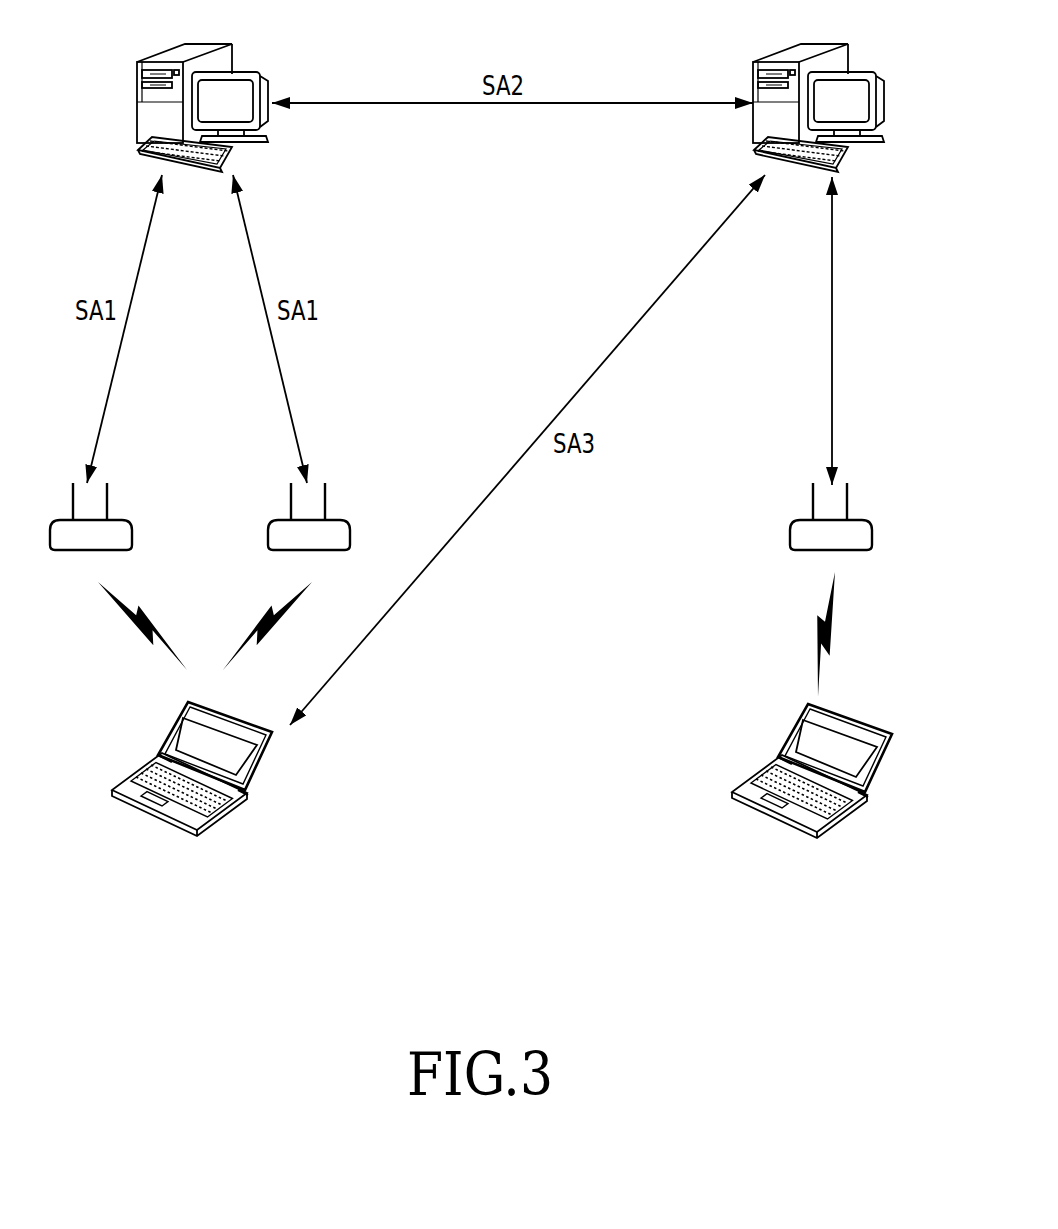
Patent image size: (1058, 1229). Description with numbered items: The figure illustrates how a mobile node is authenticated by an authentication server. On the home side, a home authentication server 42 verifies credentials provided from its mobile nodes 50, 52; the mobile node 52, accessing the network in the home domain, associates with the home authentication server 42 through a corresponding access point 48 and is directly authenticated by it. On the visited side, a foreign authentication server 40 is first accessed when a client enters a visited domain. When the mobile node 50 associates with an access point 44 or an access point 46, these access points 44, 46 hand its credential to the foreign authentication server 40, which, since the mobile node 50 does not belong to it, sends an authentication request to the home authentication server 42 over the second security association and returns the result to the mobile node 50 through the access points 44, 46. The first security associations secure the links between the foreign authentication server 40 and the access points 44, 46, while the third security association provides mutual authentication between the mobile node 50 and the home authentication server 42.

The foreign authentication server 40 is at (137, 97).
The home authentication server 42 is at (885, 104).
The access point 44 is at (132, 538).
The access point 46 is at (350, 538).
The access point 48 is at (871, 538).
The mobile node 50 is at (260, 757).
The mobile node 52 is at (880, 759).